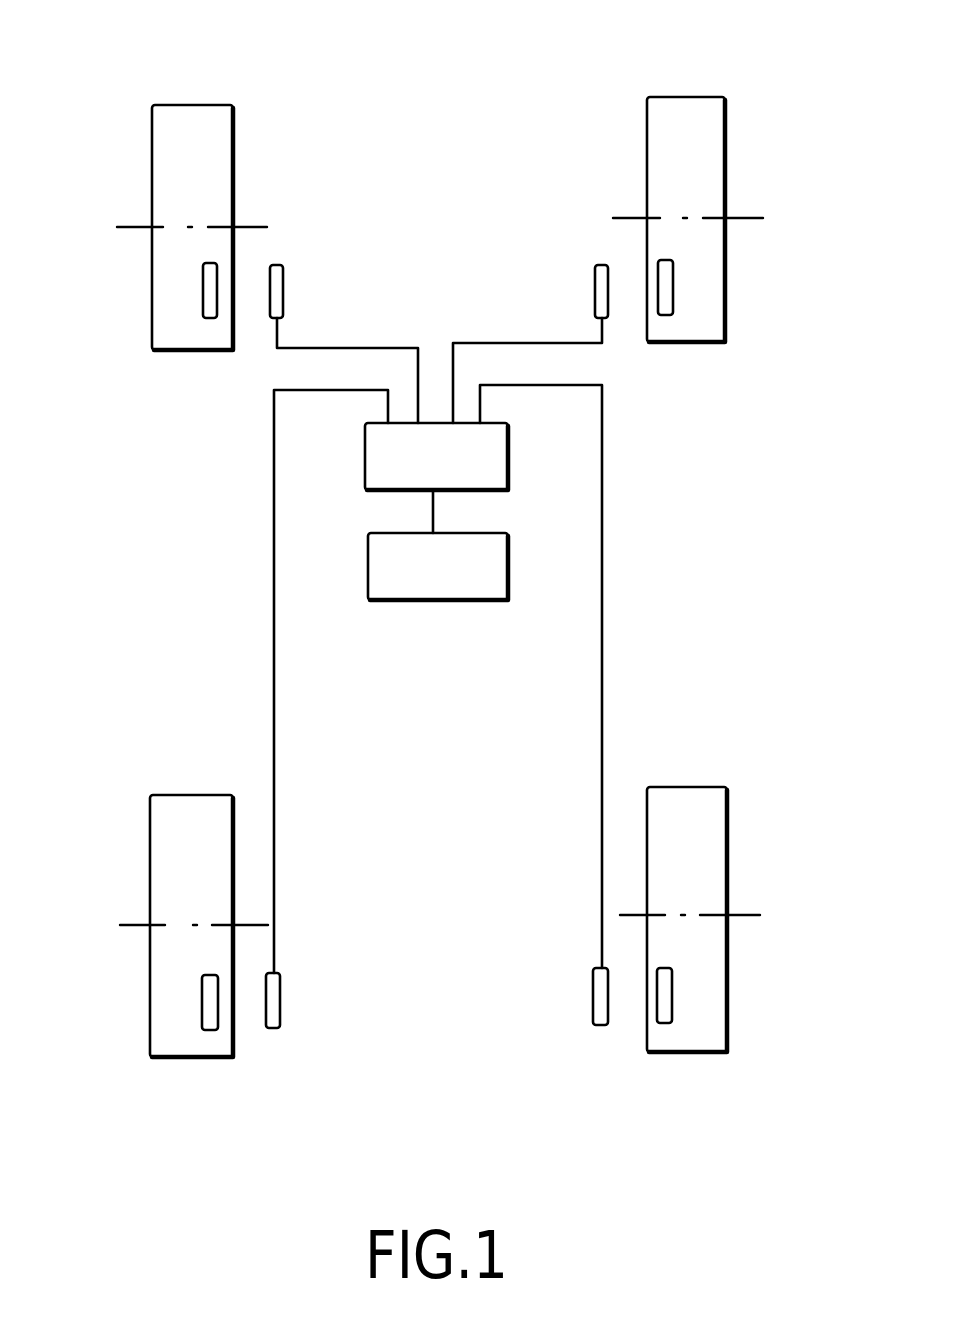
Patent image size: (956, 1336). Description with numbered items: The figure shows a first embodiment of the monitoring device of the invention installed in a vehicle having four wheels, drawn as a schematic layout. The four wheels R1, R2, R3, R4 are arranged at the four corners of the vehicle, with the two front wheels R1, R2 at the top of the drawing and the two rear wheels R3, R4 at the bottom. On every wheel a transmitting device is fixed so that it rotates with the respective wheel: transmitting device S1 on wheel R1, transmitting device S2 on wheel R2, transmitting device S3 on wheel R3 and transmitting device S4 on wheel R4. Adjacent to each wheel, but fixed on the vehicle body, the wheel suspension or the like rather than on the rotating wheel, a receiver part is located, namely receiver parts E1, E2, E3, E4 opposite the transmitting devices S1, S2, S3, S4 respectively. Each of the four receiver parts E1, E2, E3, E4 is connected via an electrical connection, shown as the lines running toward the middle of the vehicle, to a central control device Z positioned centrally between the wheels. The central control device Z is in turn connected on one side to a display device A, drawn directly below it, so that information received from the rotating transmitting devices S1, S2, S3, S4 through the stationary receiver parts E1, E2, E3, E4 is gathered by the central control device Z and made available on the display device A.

The wheel R1 is at (199, 103).
The wheel R2 is at (697, 97).
The wheel R3 is at (688, 1052).
The wheel R4 is at (192, 1057).
The transmitting device S1 is at (203, 290).
The transmitting device S2 is at (673, 290).
The transmitting device S3 is at (672, 995).
The transmitting device S4 is at (203, 998).
The receiver part E1 is at (283, 287).
The receiver part E2 is at (595, 289).
The receiver part E3 is at (593, 997).
The receiver part E4 is at (280, 1000).
The central control device Z is at (508, 449).
The display device A is at (508, 570).